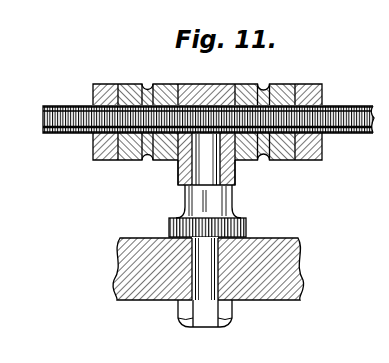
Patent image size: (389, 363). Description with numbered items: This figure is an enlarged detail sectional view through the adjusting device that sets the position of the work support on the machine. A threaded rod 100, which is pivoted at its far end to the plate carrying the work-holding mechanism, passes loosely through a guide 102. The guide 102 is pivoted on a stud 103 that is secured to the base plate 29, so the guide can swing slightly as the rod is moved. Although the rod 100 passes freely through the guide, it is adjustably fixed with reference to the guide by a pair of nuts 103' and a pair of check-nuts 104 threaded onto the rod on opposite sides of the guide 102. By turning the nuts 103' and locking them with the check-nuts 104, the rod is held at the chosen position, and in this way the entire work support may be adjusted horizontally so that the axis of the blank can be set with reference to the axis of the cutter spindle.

The threaded rod 100 is at (208, 107).
The guide 102 is at (210, 84).
The stud 103 is at (193, 211).
The nuts 103' is at (206, 107).
The check-nuts 104 is at (106, 84).
The base plate 29 is at (146, 225).